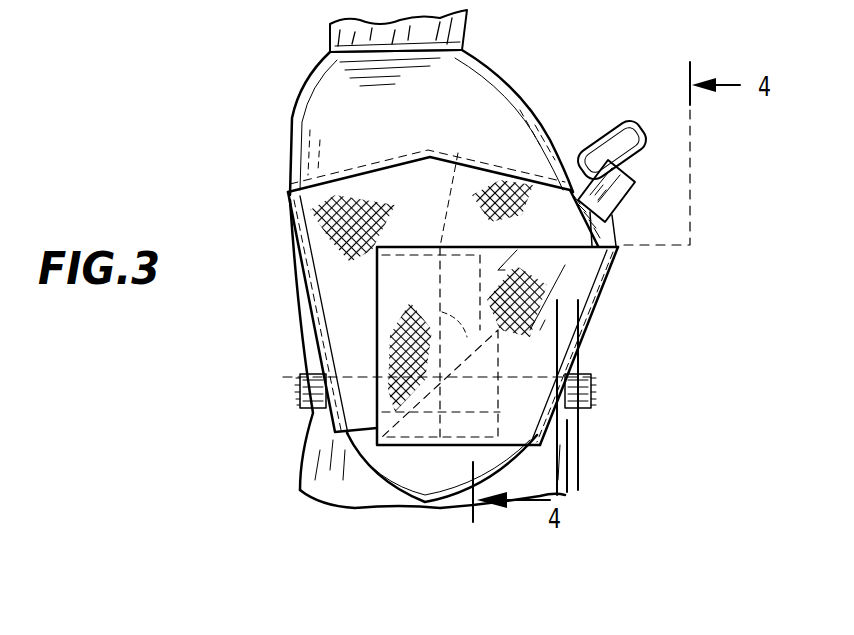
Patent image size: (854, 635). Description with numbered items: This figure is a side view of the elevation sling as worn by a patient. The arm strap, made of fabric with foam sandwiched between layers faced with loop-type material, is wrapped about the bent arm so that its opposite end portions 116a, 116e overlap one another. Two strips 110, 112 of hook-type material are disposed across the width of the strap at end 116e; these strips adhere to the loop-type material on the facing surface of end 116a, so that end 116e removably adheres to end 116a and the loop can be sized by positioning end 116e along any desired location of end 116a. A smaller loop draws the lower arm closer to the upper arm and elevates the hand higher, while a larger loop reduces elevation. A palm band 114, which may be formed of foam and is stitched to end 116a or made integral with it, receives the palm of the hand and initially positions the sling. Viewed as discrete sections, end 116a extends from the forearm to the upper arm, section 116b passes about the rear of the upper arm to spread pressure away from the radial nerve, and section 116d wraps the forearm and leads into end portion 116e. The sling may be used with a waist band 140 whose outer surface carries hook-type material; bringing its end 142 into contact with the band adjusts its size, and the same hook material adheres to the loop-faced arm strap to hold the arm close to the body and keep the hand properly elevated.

The strip of hook-type material 110 is at (520, 250).
The strip of hook-type material 112 is at (436, 346).
The palm band 114 is at (625, 197).
The end portion of arm strap 116a is at (425, 160).
The section of arm strap 116b is at (288, 237).
The section of arm strap 116d is at (595, 315).
The end portion of arm strap 116e is at (422, 263).
The waist band 140 is at (307, 410).
The end of waist band 142 is at (596, 392).